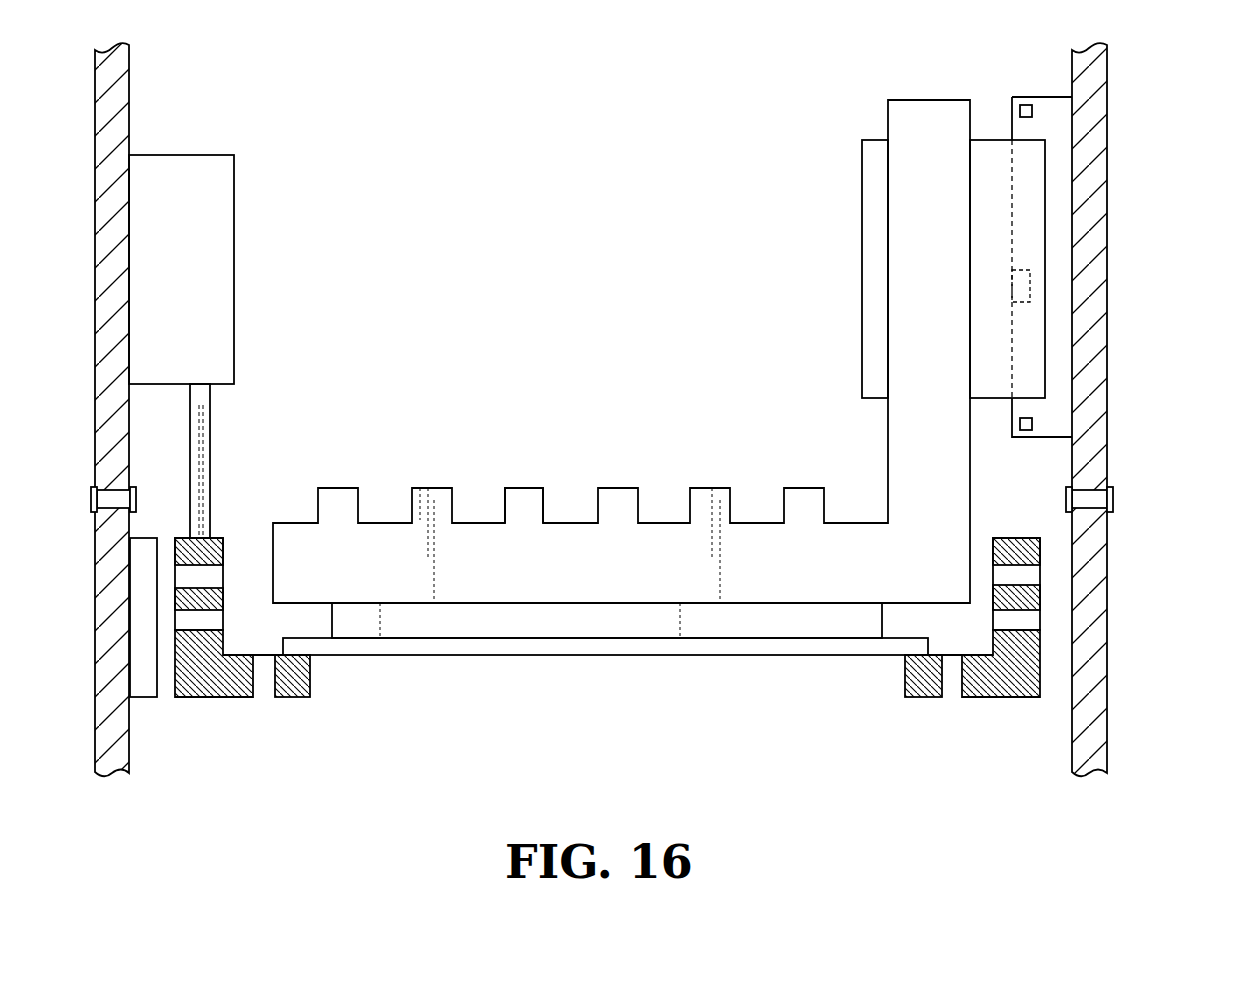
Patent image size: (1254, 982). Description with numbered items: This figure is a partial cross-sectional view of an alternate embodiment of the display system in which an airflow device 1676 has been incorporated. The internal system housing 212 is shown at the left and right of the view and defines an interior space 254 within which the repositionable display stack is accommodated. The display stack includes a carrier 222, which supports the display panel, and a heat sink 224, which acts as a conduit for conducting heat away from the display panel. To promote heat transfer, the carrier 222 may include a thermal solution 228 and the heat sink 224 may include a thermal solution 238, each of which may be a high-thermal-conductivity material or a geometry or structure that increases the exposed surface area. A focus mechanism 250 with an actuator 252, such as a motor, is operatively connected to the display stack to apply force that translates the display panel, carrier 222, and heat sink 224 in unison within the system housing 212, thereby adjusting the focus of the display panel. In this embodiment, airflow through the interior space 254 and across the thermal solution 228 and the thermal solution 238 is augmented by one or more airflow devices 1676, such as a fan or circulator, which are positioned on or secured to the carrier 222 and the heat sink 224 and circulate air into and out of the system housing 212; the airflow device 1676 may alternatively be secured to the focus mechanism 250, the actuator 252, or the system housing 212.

The system housing 212 is at (1110, 131).
The focus mechanism 250 is at (238, 196).
The actuator 252 is at (194, 300).
The interior space 254 is at (535, 257).
The thermal solution 238 is at (548, 488).
The heat sink 224 is at (378, 520).
The airflow device 1676 is at (146, 686).
The carrier 222 is at (295, 700).
The thermal solution 228 is at (952, 700).